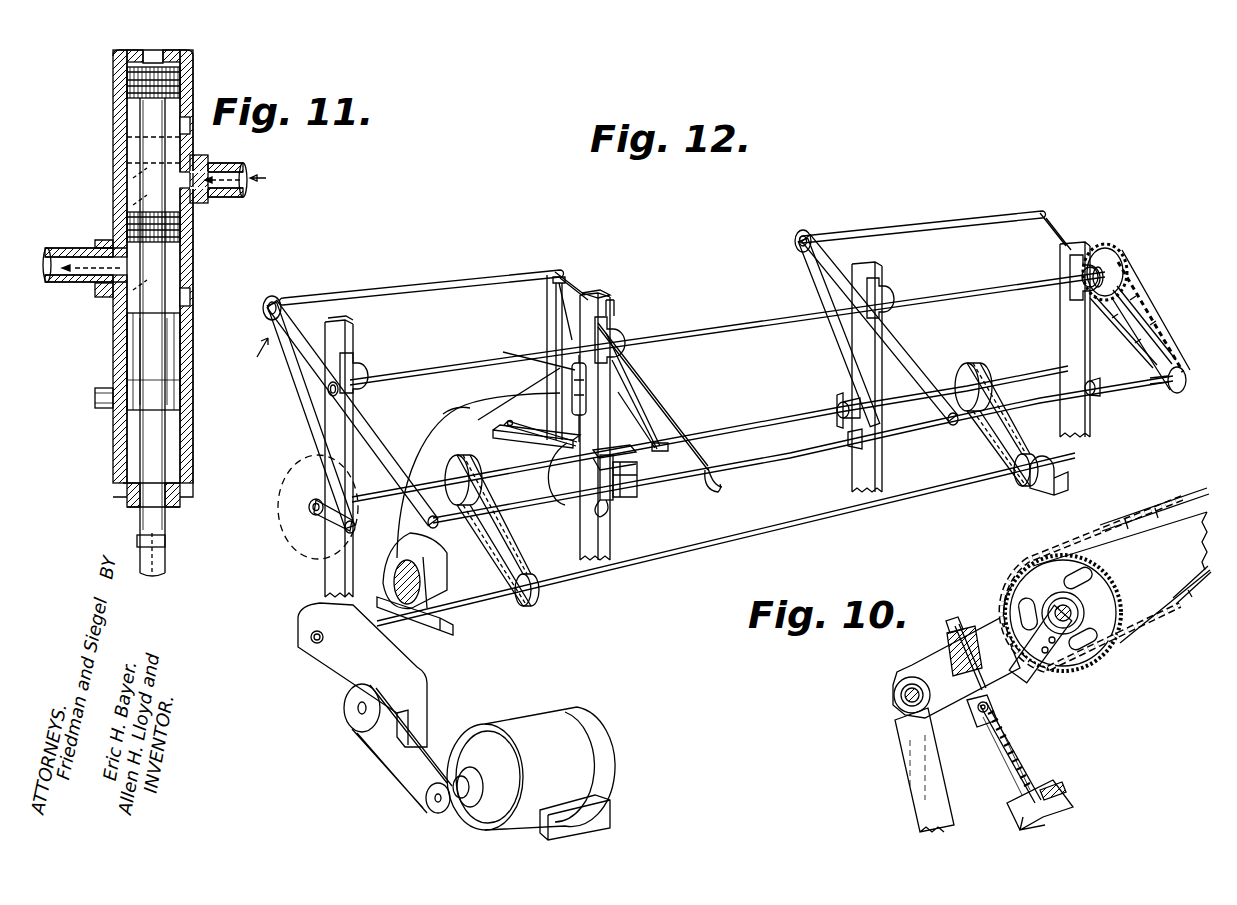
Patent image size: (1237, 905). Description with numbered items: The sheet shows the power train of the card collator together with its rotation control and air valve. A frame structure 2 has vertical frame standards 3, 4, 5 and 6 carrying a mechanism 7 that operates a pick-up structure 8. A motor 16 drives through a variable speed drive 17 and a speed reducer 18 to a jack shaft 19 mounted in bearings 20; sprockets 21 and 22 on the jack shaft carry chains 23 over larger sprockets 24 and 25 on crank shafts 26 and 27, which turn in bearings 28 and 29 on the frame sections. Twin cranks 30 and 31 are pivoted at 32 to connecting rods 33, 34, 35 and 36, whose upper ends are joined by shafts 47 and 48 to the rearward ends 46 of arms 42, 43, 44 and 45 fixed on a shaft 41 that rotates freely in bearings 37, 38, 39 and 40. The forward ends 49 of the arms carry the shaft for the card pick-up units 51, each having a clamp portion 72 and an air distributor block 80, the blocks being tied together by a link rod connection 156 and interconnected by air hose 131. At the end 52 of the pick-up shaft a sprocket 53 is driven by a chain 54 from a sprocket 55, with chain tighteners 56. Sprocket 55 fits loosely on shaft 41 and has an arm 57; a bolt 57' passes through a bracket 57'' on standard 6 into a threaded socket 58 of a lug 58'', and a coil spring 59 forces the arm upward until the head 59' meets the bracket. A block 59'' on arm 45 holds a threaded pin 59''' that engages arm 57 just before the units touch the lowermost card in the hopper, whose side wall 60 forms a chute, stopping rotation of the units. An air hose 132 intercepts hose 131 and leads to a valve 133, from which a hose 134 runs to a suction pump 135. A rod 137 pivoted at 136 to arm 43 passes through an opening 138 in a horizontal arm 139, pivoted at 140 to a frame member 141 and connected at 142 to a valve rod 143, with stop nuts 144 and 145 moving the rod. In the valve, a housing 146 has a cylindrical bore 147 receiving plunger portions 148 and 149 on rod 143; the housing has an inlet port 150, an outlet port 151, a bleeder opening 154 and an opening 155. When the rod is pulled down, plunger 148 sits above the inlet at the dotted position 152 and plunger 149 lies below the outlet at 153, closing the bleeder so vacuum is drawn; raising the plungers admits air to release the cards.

In FIG. 12, the frame structure 2 is at (606, 294).
In FIG. 12, the vertical frame standard 3 is at (355, 336).
In FIG. 12, the vertical frame standard 4 is at (622, 305).
In FIG. 12, the vertical frame standard 5 is at (882, 272).
In FIG. 12, the vertical frame standard 6 is at (1080, 243).
In FIG. 12, the mechanism 7 is at (255, 352).
In FIG. 12, the pick-up structure 8 is at (638, 456).
In FIG. 12, the motor 16 is at (610, 758).
In FIG. 12, the variable speed drive 17 is at (355, 735).
In FIG. 12, the speed reducer 18 is at (425, 694).
In FIG. 12, the jack shaft 19 is at (580, 577).
In FIG. 12, the bearings 20 is at (1062, 455).
In FIG. 12, the sprocket 21 is at (522, 606).
In FIG. 12, the sprocket 22 is at (1020, 487).
In FIG. 12, the chains 23 is at (522, 538).
In FIG. 12, the sprocket 24 is at (452, 468).
In FIG. 12, the sprocket 25 is at (962, 363).
In FIG. 12, the crank shaft 26 is at (507, 470).
In FIG. 12, the crank shaft 27 is at (1016, 377).
In FIG. 12, the bearing 28 is at (283, 483).
In FIG. 12, the bearing 29 is at (838, 405).
In FIG. 12, the twin crank 30 is at (318, 512).
In FIG. 12, the twin crank 31 is at (848, 438).
In FIG. 12, the pivot 32 is at (352, 530).
In FIG. 12, the connecting rod 33 is at (303, 400).
In FIG. 12, the connecting rod 34 is at (556, 322).
In FIG. 12, the connecting rod 35 is at (815, 278).
In FIG. 12, the connecting rod 36 is at (1052, 258).
In FIG. 10, the connecting rod 36 is at (905, 742).
In FIG. 12, the bearing 37 is at (365, 376).
In FIG. 12, the bearing 38 is at (626, 331).
In FIG. 12, the bearing 39 is at (892, 299).
In FIG. 12, the bearing 40 is at (1104, 264).
In FIG. 12, the shaft 41 is at (715, 330).
In FIG. 10, the shaft 41 is at (1078, 615).
In FIG. 12, the arm 42 is at (303, 350).
In FIG. 12, the arm 43 is at (584, 295).
In FIG. 12, the arm 44 is at (900, 346).
In FIG. 12, the arm 45 is at (1158, 330).
In FIG. 10, the arm 45 is at (1193, 500).
In FIG. 12, the rearward end 46 is at (281, 300).
In FIG. 12, the shaft 47 is at (425, 287).
In FIG. 12, the shaft 48 is at (932, 226).
In FIG. 10, the shaft 48 is at (897, 685).
In FIG. 12, the forward end 49 is at (720, 490).
In FIG. 12, the card pick-up unit 51 is at (645, 498).
In FIG. 12, the shaft end 52 is at (1152, 387).
In FIG. 12, the sprocket 53 is at (1177, 394).
In FIG. 12, the chain 54 is at (1142, 293).
In FIG. 10, the chain 54 is at (1107, 523).
In FIG. 12, the sprocket 55 is at (1127, 266).
In FIG. 10, the sprocket 55 is at (1030, 587).
In FIG. 12, the chain tighteners 56 is at (1120, 337).
In FIG. 10, the chain tighteners 56 is at (1200, 597).
In FIG. 10, the arm 57 is at (1042, 654).
In FIG. 10, the bolt 57' is at (1035, 752).
In FIG. 10, the bracket 57'' is at (1083, 789).
In FIG. 10, the threaded socket 58 is at (1014, 715).
In FIG. 10, the lug 58'' is at (971, 737).
In FIG. 10, the coil spring 59 is at (1001, 762).
In FIG. 10, the head 59' is at (1062, 806).
In FIG. 10, the block 59'' is at (929, 657).
In FIG. 10, the threaded pin 59''' is at (967, 610).
In FIG. 12, the side wall 60 is at (793, 457).
In FIG. 12, the clamp portion 72 is at (620, 500).
In FIG. 12, the air distributor block 80 is at (620, 450).
In FIG. 12, the air hose 131 is at (712, 436).
In FIG. 11, the air hose 132 is at (242, 167).
In FIG. 12, the air hose 132 is at (662, 420).
In FIG. 11, the valve 133 is at (116, 498).
In FIG. 12, the valve 133 is at (480, 414).
In FIG. 11, the hose 134 is at (58, 249).
In FIG. 12, the hose 134 is at (443, 414).
In FIG. 12, the suction pump 135 is at (440, 582).
In FIG. 12, the pivot 136 is at (553, 278).
In FIG. 12, the rod 137 is at (556, 300).
In FIG. 12, the opening 138 is at (572, 393).
In FIG. 12, the horizontal arm 139 is at (510, 424).
In FIG. 12, the pivoted end 140 is at (456, 410).
In FIG. 12, the frame member 141 is at (527, 441).
In FIG. 12, the pivotal connection 142 is at (640, 400).
In FIG. 11, the valve rod 143 is at (158, 527).
In FIG. 12, the valve rod 143 is at (622, 380).
In FIG. 12, the stop nut 144 is at (563, 506).
In FIG. 12, the stop nut 145 is at (560, 372).
In FIG. 11, the housing 146 is at (188, 372).
In FIG. 11, the cylindrical bore 147 is at (130, 118).
In FIG. 11, the plunger portion 148 is at (180, 80).
In FIG. 11, the plunger portion 149 is at (180, 226).
In FIG. 11, the inlet port 150 is at (206, 168).
In FIG. 11, the outlet port 151 is at (106, 283).
In FIG. 11, the dotted-line position 152 is at (127, 172).
In FIG. 11, the lowered position 153 is at (127, 316).
In FIG. 11, the bleeder opening 154 is at (190, 297).
In FIG. 11, the opening 155 is at (190, 124).
In FIG. 12, the link rod connection 156 is at (604, 517).